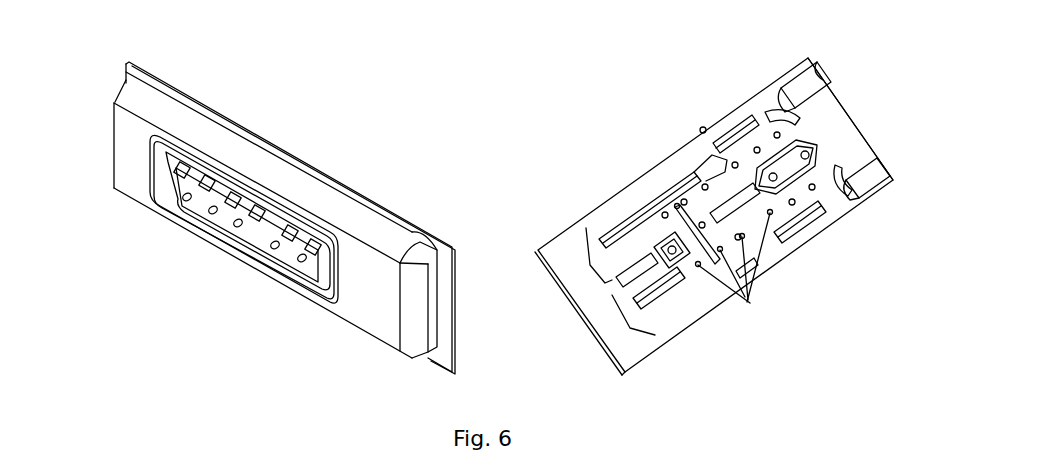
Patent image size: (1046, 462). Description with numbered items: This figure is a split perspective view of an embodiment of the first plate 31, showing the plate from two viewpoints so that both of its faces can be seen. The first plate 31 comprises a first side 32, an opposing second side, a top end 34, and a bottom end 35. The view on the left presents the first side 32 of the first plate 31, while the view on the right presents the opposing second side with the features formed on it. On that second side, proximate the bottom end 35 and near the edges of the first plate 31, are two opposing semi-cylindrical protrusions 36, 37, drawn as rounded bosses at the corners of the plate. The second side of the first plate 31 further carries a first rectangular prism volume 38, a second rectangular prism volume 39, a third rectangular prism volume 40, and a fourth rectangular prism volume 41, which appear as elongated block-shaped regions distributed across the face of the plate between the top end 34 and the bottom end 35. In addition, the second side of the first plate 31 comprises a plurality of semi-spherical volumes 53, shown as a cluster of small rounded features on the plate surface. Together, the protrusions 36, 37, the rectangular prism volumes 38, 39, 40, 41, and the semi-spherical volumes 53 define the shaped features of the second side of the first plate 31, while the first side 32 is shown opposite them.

The first plate 31 is at (473, 64).
The first side 32 is at (370, 322).
The top end 34 is at (462, 322).
The bottom end 35 is at (108, 156).
The semi-cylindrical protrusion 36 is at (815, 73).
The semi-cylindrical protrusion 37 is at (873, 177).
The first rectangular prism volume 38 is at (730, 130).
The second rectangular prism volume 39 is at (803, 233).
The third rectangular prism volume 40 is at (618, 233).
The fourth rectangular prism volume 41 is at (660, 290).
The semi-spherical volumes 53 is at (748, 303).